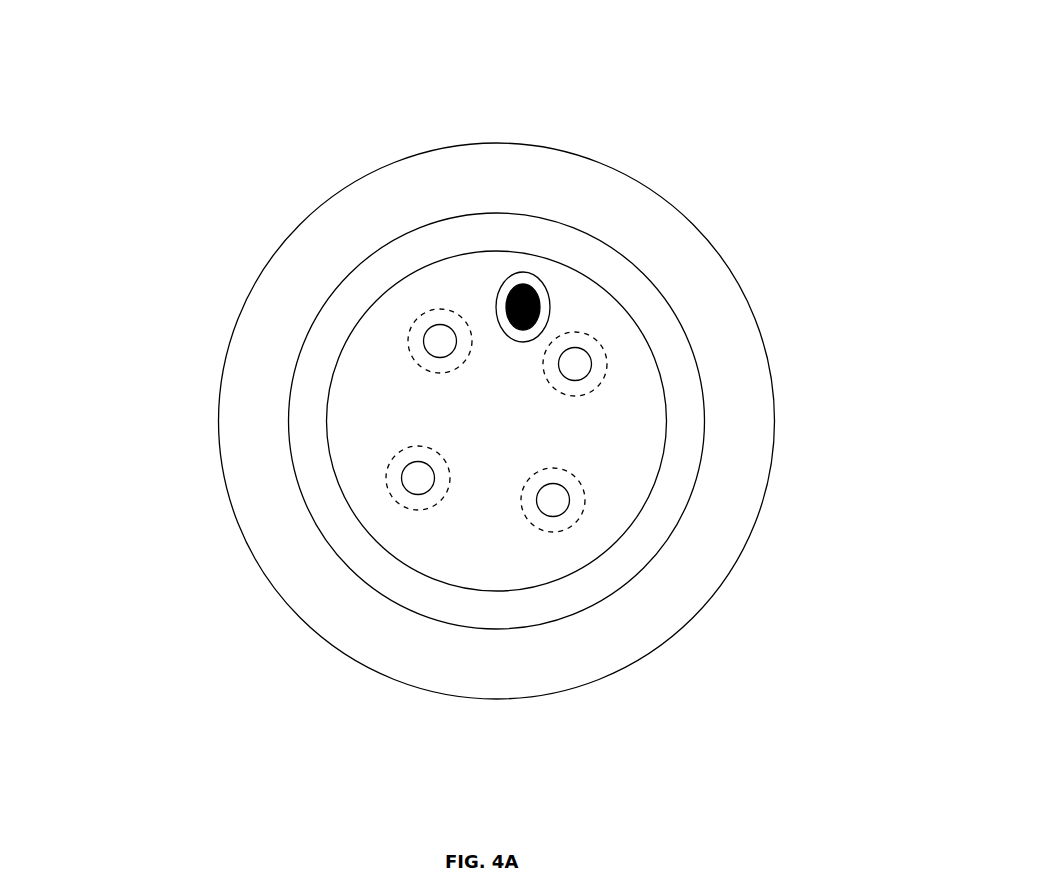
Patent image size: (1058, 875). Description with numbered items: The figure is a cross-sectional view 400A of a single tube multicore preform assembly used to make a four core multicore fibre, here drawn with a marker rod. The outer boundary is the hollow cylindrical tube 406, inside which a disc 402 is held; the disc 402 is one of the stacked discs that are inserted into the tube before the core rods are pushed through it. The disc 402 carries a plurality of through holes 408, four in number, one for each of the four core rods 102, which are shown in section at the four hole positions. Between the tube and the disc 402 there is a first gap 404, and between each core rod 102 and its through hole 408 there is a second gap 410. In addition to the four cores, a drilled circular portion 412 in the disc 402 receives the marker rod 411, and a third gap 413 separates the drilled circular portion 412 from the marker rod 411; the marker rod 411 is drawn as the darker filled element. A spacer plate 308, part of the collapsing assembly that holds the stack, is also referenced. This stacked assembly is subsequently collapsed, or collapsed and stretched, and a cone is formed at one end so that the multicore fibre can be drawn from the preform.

The cross-sectional view 400A is at (108, 63).
The plurality of core rods 102 is at (430, 336).
The spacer plate 308 is at (430, 368).
The disc 402 is at (627, 460).
The first gap 404 is at (433, 590).
The hollow cylindrical tube 406 is at (737, 317).
The plurality of through holes 408 is at (587, 338).
The second gap 410 is at (438, 313).
The marker rod 411 is at (507, 284).
The drilled circular portion 412 is at (568, 333).
The third gap 413 is at (515, 280).